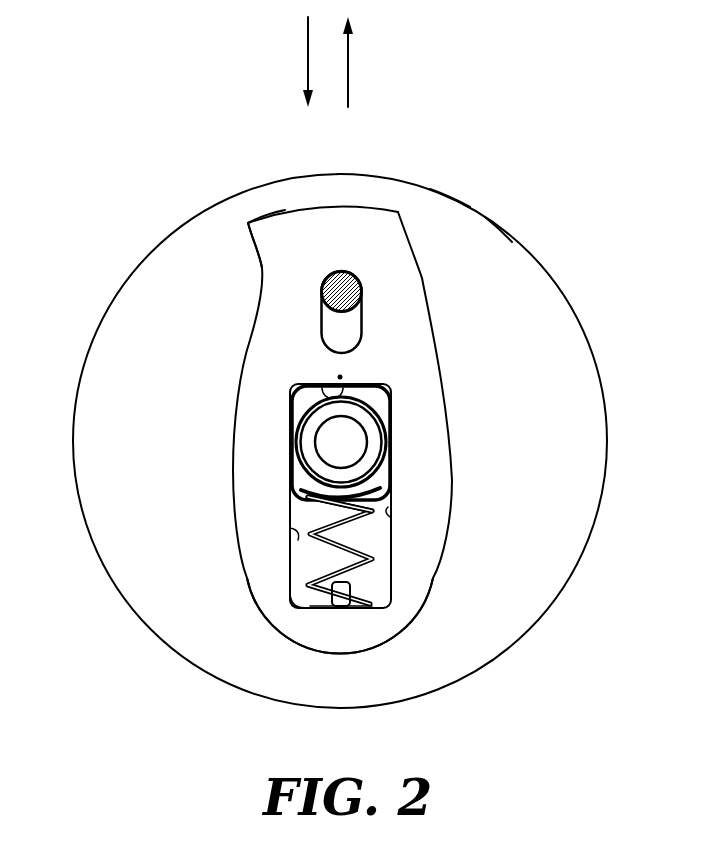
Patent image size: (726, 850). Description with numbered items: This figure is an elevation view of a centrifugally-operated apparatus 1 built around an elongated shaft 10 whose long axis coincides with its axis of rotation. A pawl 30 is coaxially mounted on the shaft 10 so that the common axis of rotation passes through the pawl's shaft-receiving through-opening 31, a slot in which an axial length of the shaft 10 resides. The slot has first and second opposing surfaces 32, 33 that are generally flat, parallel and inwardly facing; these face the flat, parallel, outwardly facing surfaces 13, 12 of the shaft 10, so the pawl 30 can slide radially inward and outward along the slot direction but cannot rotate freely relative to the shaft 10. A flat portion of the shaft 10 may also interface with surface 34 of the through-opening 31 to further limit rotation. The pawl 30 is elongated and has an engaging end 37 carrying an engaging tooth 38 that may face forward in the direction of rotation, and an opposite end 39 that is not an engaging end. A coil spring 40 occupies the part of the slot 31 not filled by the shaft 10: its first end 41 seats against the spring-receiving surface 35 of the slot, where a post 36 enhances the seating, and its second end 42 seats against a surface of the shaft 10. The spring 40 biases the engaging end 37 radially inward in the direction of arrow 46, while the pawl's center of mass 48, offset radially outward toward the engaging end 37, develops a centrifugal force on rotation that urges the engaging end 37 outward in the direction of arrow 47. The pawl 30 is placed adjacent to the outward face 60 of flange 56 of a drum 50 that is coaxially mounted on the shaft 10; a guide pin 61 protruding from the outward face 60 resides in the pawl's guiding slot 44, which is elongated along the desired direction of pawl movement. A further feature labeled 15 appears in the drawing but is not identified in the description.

The centrifugally-operated apparatus 1 is at (116, 70).
The elongated shaft 10 is at (357, 413).
The flat surface of shaft 12 is at (392, 442).
The flat surface of shaft 13 is at (290, 440).
The retainer 15 is at (390, 485).
The pawl 30 is at (423, 275).
The shaft-receiving through-opening 31 is at (380, 542).
The first opposing surface of slot 32 is at (290, 530).
The second opposing surface of slot 33 is at (390, 517).
The surface of through-opening 34 is at (317, 388).
The spring-receiving surface 35 is at (302, 602).
The post 36 is at (343, 608).
The engaging end 37 is at (328, 205).
The engaging tooth 38 is at (247, 224).
The opposite end 39 is at (342, 655).
The spring 40 is at (372, 572).
The first end of spring 41 is at (317, 610).
The second end of spring 42 is at (305, 515).
The guiding slot 44 is at (332, 327).
The arrow 46 is at (307, 57).
The arrow 47 is at (349, 62).
The center of mass 48 is at (341, 377).
The drum 50 is at (553, 283).
The second flange 56 is at (453, 202).
The outward face 60 is at (487, 247).
The guide pin 61 is at (345, 291).